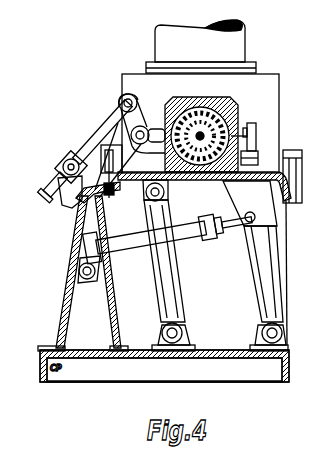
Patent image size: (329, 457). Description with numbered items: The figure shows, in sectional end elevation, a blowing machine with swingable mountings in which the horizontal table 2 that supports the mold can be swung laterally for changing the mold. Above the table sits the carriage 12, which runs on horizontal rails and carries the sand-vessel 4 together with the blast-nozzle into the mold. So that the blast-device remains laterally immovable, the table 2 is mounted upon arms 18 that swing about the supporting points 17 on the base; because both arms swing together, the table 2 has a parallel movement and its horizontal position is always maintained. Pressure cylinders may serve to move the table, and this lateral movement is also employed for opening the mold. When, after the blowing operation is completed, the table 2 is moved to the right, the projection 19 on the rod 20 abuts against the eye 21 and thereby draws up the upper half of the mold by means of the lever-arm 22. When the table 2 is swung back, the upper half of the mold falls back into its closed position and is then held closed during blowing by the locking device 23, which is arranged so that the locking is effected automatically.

The sand-vessel 4 is at (173, 34).
The carriage 12 is at (262, 84).
The lever-arm 22 is at (148, 110).
The rod 20 is at (99, 131).
The eye 21 is at (55, 160).
The projection 19 is at (51, 193).
The locking device 23 is at (254, 153).
The table 2 is at (194, 232).
The arms 18 is at (251, 285).
The supporting points 17 is at (256, 330).